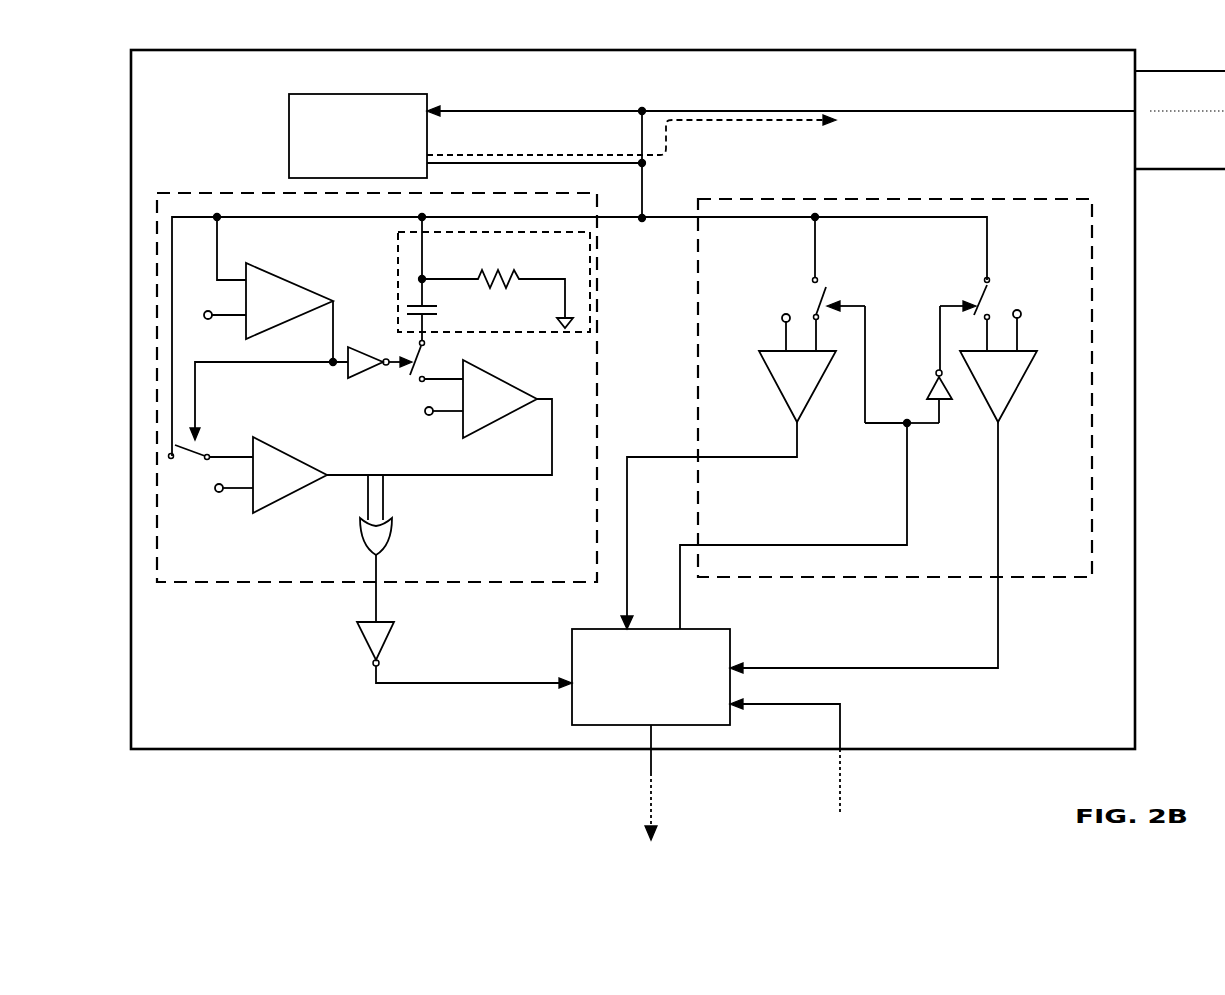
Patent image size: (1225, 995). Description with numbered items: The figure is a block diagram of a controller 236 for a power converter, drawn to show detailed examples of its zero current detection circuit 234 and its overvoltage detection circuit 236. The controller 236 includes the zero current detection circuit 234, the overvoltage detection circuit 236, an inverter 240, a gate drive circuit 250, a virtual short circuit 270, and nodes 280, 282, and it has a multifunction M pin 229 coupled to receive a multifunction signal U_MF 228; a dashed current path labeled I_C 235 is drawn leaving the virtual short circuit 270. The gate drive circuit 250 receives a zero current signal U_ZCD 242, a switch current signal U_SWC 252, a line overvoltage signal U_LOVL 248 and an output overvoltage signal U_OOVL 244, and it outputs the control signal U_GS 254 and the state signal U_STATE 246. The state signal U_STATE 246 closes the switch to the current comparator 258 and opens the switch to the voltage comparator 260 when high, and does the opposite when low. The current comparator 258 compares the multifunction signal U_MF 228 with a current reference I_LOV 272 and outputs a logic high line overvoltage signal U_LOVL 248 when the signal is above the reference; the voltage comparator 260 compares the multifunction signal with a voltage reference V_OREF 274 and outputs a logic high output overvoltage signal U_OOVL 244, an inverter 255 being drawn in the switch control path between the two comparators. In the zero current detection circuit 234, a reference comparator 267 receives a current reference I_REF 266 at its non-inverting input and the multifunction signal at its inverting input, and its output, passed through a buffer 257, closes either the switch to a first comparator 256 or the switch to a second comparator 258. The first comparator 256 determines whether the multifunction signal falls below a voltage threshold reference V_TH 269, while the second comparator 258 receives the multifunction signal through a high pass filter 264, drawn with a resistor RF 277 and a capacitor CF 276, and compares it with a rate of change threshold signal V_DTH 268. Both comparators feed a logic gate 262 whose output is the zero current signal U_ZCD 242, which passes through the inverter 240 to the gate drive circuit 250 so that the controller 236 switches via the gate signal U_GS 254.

The multifunction signal U_MF 228 is at (1192, 118).
The multifunction M pin 229 is at (1210, 63).
The zero current detection circuit 234 is at (200, 193).
The current IC 235 is at (745, 140).
The controller 236 is at (257, 751).
The inverter 240 is at (356, 638).
The zero current signal U_ZCD 242 is at (468, 658).
The output overvoltage signal U_OOVL 244 is at (865, 646).
The state signal U_STATE 246 is at (786, 524).
The line overvoltage signal U_LOVL 248 is at (646, 428).
The gate drive circuit 250 is at (572, 712).
The switch current signal U_SWC 252 is at (912, 796).
The control signal U_GS 254 is at (708, 800).
The inverter 255 is at (930, 386).
The first comparator 256 is at (287, 450).
The buffer 257 is at (372, 347).
The current comparator / second comparator 258 is at (517, 414).
The voltage comparator 260 is at (1025, 388).
The logic gate 262 is at (395, 536).
The high pass filter 264 is at (597, 290).
The current reference I_REF 266 is at (218, 343).
The reference comparator 267 is at (316, 294).
The rate of change threshold signal V_DTH 268 is at (394, 428).
The voltage threshold reference V_TH 269 is at (212, 512).
The virtual short circuit 270 is at (283, 117).
The current reference I_LOV 272 is at (755, 298).
The voltage reference V_OREF 274 is at (1042, 288).
The filter capacitor CF 276 is at (472, 316).
The filter resistor RF 277 is at (520, 262).
The node 280 is at (642, 111).
The node 282 is at (642, 163).